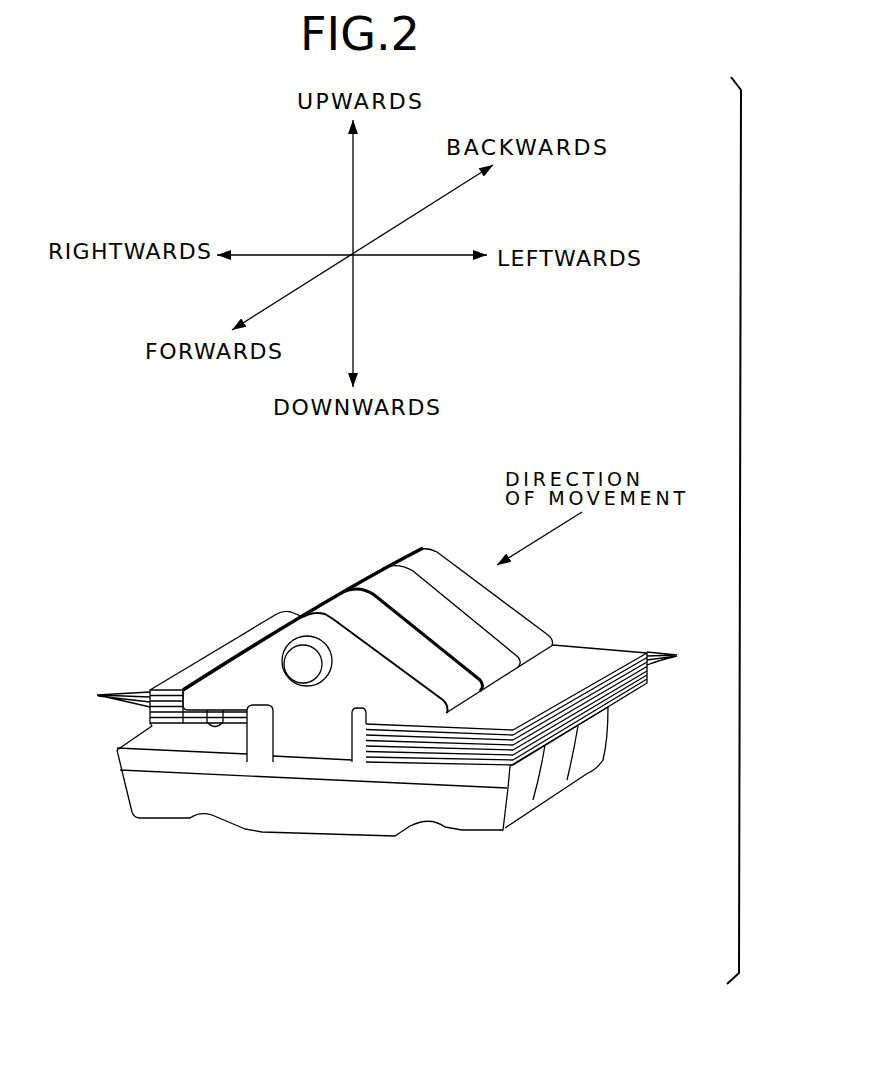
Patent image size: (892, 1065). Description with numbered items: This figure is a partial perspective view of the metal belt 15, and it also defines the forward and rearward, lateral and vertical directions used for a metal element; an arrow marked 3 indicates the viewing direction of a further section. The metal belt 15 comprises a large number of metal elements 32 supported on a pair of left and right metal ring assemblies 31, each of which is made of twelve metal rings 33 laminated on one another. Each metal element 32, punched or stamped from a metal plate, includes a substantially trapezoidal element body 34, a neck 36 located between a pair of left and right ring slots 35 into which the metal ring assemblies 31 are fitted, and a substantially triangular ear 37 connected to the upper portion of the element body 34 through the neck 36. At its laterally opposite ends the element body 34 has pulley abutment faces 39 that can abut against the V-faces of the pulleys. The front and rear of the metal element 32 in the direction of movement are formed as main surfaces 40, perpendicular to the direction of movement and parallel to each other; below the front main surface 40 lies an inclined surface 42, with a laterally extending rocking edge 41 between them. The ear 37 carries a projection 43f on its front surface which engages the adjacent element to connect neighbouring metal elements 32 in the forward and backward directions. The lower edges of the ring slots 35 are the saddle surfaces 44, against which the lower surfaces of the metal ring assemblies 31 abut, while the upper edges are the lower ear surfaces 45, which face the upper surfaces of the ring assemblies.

The section line III 3 is at (642, 720).
The metal belt 15 is at (357, 531).
The metal ring assembly 31 is at (163, 675).
The metal element 32 is at (401, 859).
The metal ring 33 is at (383, 676).
The element body 34 is at (148, 803).
The ring slot 35 is at (257, 752).
The neck 36 is at (314, 757).
The ear 37 is at (254, 667).
The pulley abutment face 39 is at (518, 805).
The main surface 40 is at (325, 731).
The rocking edge 41 is at (237, 777).
The inclined surface 42 is at (332, 831).
The projection 43f is at (300, 658).
The saddle surface 44 is at (190, 732).
The lower ear surface 45 is at (225, 713).